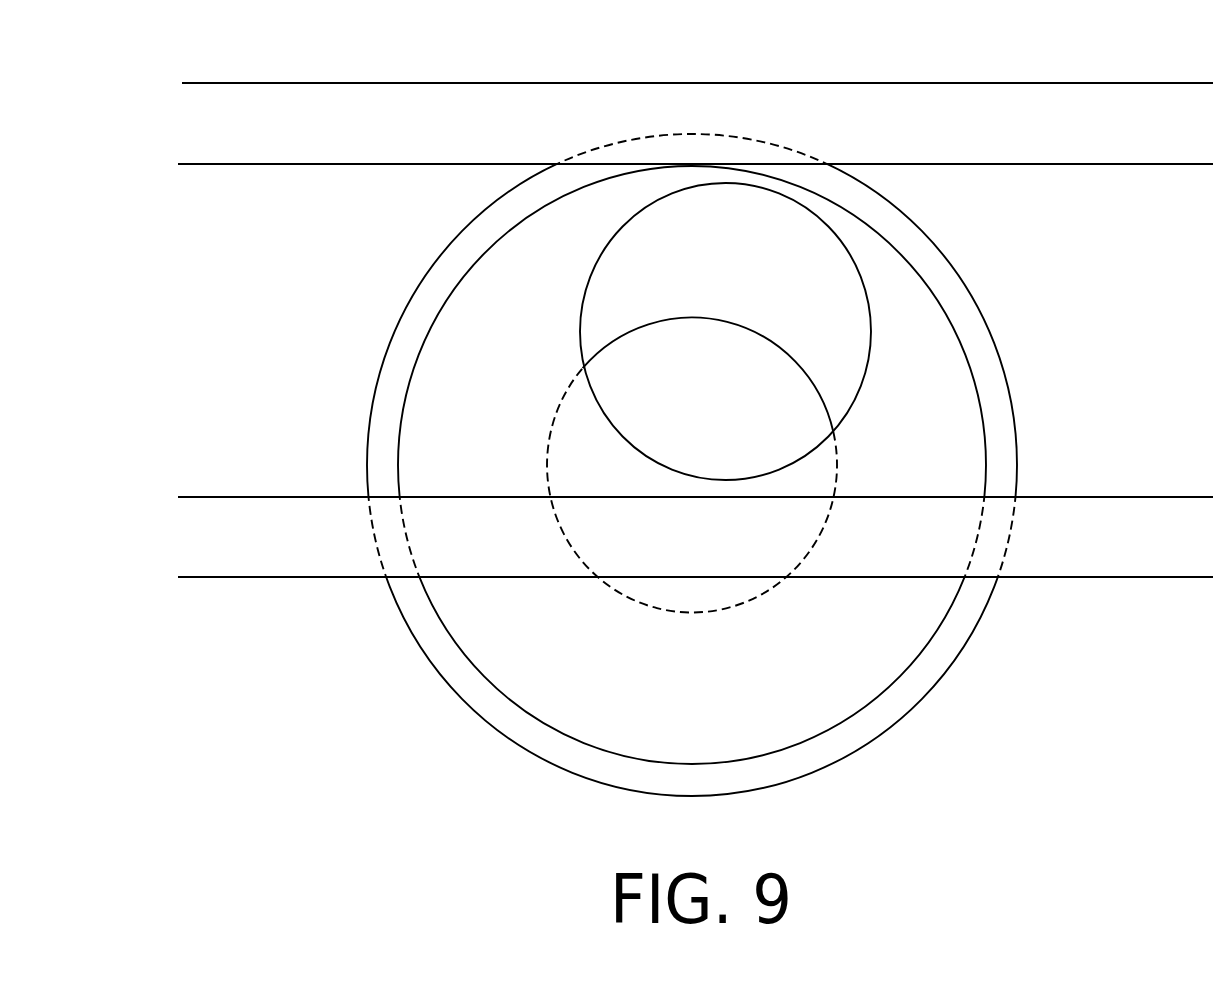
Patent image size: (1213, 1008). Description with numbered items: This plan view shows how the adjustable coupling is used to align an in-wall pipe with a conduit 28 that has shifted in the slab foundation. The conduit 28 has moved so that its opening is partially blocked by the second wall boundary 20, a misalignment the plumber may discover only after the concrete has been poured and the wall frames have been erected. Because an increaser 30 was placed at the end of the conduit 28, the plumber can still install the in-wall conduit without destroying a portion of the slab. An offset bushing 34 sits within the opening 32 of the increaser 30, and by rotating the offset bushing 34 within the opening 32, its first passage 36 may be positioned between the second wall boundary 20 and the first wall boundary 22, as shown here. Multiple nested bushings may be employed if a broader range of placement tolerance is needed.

The second wall boundary 20 is at (647, 465).
The first wall boundary 22 is at (695, 299).
The conduit 28 is at (568, 464).
The increaser 30 is at (755, 394).
The opening 32 is at (755, 394).
The offset bushing 34 is at (836, 380).
The first passage 36 is at (751, 252).